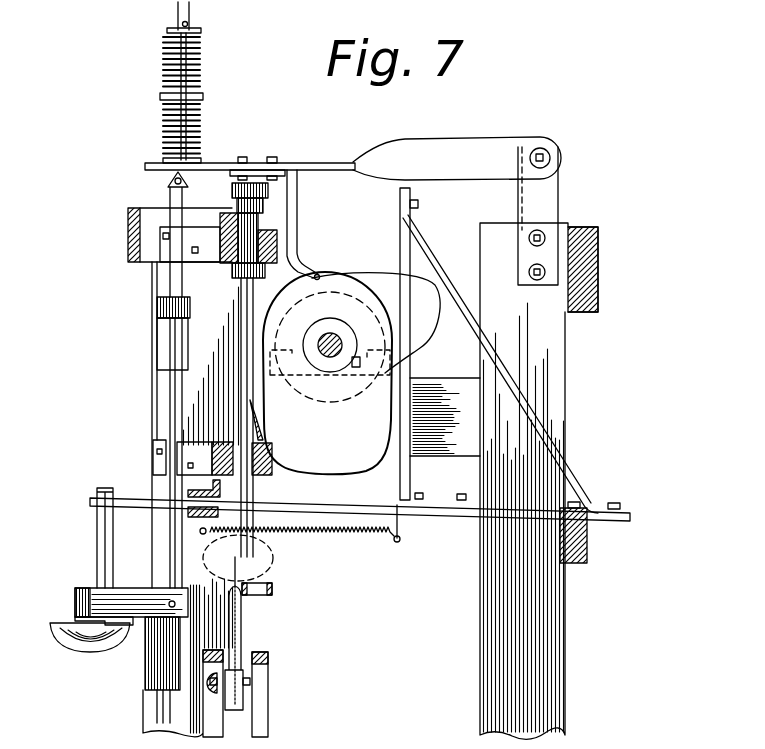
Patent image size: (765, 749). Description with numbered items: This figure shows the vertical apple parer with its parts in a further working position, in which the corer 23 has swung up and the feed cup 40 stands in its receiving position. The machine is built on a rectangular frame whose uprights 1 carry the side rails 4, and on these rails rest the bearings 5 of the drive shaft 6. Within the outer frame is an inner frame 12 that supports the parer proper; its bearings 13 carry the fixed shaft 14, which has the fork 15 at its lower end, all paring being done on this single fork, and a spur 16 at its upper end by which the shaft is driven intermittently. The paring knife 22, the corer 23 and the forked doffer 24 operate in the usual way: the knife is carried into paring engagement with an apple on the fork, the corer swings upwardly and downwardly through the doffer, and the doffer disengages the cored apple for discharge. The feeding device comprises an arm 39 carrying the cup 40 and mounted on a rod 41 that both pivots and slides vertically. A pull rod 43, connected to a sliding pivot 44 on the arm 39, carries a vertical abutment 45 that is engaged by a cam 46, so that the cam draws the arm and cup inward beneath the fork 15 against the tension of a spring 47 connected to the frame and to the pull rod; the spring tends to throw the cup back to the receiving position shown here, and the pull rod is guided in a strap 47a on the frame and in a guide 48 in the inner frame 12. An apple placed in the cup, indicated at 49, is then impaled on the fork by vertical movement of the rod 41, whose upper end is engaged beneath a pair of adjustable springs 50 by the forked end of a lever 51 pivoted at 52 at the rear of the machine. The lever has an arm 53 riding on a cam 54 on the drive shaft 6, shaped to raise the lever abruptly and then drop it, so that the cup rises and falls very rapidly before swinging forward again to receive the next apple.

The uprights 1 is at (152, 700).
The side rails 4 is at (450, 381).
The bearings 5 is at (285, 355).
The drive shaft 6 is at (338, 338).
The inner frame 12 is at (157, 460).
The bearings 13 is at (258, 242).
The fixed shaft 14 is at (272, 408).
The fork 15 is at (250, 550).
The spur 16 is at (268, 190).
The paring knife 22 is at (276, 583).
The corer 23 is at (238, 637).
The doffer 24 is at (268, 673).
The arm 39 is at (78, 593).
The cup 40 is at (68, 644).
The rod 41 is at (190, 17).
The pull rod 43 is at (372, 494).
The sliding pivot 44 is at (103, 540).
The vertical abutment 45 is at (404, 250).
The cam 46 is at (327, 373).
The spring 47 is at (334, 542).
The anchor 47a is at (590, 500).
The guide 48 is at (187, 494).
The apple 49 is at (278, 538).
The adjustable springs 50 is at (205, 72).
The lever 51 is at (332, 160).
The pivot 52 is at (548, 151).
The arm 53 is at (304, 266).
The cam 54 is at (425, 322).